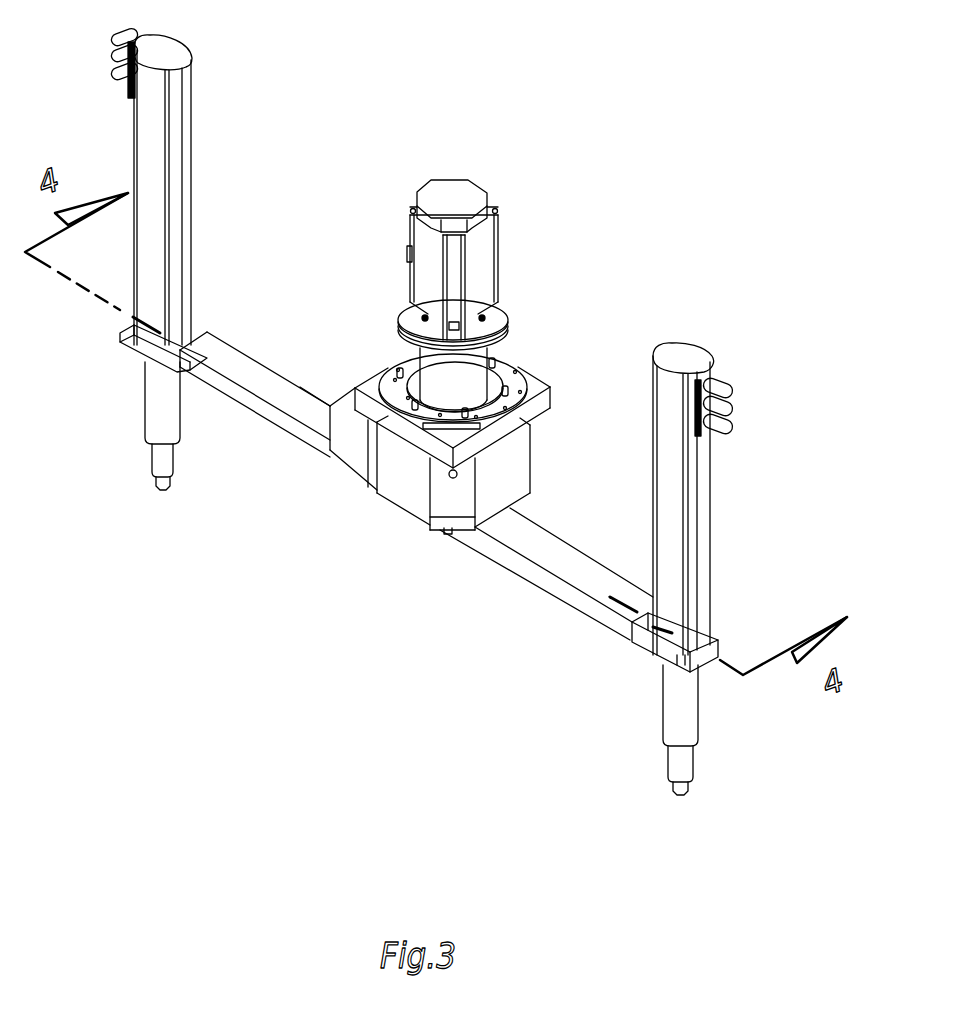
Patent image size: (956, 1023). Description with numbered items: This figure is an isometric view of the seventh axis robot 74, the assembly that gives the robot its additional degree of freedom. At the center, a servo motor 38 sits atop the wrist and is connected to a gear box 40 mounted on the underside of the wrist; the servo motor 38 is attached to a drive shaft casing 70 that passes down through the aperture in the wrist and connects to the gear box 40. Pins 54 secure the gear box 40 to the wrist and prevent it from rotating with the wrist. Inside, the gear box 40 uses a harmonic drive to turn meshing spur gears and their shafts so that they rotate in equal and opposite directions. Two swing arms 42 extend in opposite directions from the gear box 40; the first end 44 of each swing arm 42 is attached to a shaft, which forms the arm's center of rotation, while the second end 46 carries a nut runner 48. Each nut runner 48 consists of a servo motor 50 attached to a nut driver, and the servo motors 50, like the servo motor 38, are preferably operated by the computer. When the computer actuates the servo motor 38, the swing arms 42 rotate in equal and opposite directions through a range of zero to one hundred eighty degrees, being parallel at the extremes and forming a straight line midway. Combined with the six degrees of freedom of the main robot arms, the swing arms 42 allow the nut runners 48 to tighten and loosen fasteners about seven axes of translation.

The servo motor 38 is at (418, 277).
The gear box 40 is at (520, 463).
The swing arms 42 is at (272, 418).
The first end 44 is at (447, 531).
The second end 46 is at (122, 334).
The nut runners 48 is at (148, 413).
The servo motor 50 is at (180, 163).
The pins 54 is at (500, 356).
The drive shaft casing 70 is at (402, 356).
The seventh axis robot 74 is at (495, 148).